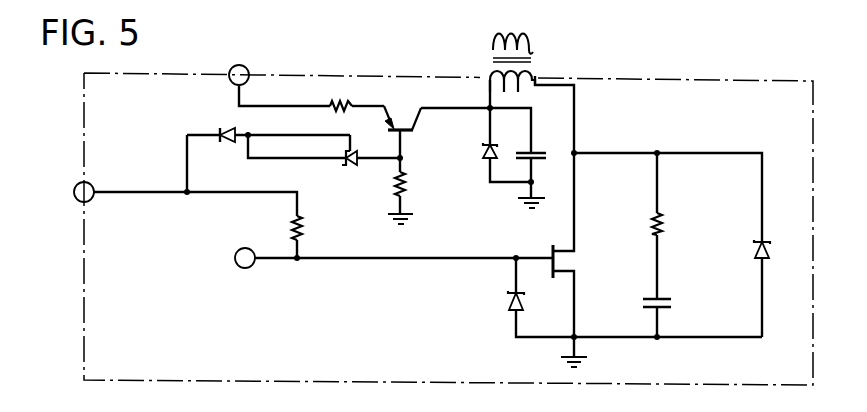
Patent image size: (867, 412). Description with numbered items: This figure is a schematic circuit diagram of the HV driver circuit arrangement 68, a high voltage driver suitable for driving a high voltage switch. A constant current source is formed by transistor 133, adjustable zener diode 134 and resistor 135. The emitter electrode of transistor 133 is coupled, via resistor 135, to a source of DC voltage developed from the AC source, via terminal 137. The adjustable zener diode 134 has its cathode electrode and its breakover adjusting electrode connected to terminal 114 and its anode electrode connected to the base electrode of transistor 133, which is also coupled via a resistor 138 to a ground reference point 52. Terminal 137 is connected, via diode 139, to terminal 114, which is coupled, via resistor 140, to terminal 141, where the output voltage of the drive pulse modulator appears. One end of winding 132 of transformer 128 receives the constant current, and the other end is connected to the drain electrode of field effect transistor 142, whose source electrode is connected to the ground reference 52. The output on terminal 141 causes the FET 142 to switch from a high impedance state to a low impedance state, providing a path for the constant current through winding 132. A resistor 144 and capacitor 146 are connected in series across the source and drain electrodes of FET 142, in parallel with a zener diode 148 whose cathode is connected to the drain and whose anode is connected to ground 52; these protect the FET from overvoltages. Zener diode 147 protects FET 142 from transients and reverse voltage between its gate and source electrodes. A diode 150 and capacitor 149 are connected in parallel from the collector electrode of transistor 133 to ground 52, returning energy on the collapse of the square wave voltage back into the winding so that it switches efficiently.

The ground reference point 52 is at (412, 213).
The HV driver circuit arrangement 68 is at (727, 80).
The terminal 114 is at (73, 192).
The transformer 128 is at (535, 62).
The winding 132 is at (526, 90).
The transistor 133 is at (404, 125).
The adjustable zener diode 134 is at (350, 167).
The resistor 135 is at (333, 104).
The terminal 137 is at (238, 64).
The resistor 138 is at (404, 176).
The diode 139 is at (221, 131).
The resistor 140 is at (302, 228).
The terminal 141 is at (235, 259).
The field effect transistor 142 is at (568, 268).
The resistor 144 is at (664, 224).
The capacitor 146 is at (666, 296).
The zener diode 147 is at (508, 307).
The zener diode 148 is at (769, 250).
The capacitor 149 is at (546, 153).
The diode 150 is at (484, 151).